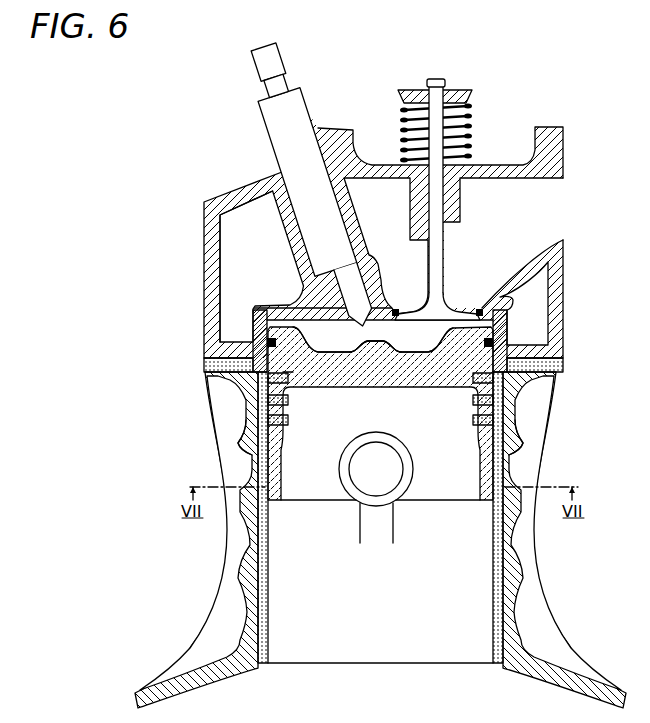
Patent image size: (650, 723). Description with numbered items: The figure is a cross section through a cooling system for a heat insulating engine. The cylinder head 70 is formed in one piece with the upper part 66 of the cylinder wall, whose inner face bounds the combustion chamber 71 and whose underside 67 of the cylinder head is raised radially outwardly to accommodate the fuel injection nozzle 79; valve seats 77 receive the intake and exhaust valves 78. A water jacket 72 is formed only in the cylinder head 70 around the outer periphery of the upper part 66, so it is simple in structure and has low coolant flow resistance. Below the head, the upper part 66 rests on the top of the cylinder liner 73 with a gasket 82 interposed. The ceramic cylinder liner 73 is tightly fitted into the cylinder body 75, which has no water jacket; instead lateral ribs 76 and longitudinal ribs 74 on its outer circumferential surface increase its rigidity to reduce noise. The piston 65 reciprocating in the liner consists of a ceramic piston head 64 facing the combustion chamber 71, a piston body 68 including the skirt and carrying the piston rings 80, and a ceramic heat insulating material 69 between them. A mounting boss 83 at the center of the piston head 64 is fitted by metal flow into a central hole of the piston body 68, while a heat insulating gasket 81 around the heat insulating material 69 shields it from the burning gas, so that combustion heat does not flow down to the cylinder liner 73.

The ceramic piston head 64 is at (402, 360).
The piston 65 is at (322, 500).
The upper part of cylinder wall 66 is at (262, 333).
The underside of cylinder head 67 is at (303, 317).
The piston body 68 is at (290, 408).
The heat insulating material 69 is at (320, 377).
The cylinder head 70 is at (213, 302).
The combustion chamber 71 is at (335, 350).
The water jacket 72 is at (238, 262).
The cylinder liner 73 is at (265, 418).
The longitudinal ribs 74 is at (233, 515).
The cylinder body 75 is at (255, 590).
The lateral ribs 76 is at (243, 456).
The valve seats 77 is at (398, 310).
The intake and exhaust valves 78 is at (437, 263).
The fuel injection nozzle 79 is at (292, 110).
The piston rings 80 is at (468, 400).
The heat insulating gasket 81 is at (270, 342).
The gasket 82 is at (212, 381).
The mounting boss 83 is at (370, 382).